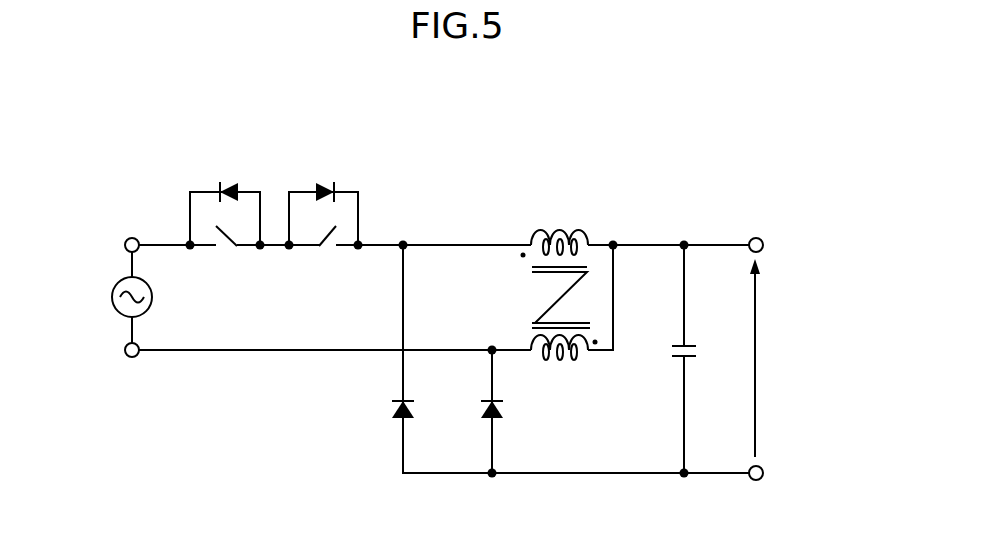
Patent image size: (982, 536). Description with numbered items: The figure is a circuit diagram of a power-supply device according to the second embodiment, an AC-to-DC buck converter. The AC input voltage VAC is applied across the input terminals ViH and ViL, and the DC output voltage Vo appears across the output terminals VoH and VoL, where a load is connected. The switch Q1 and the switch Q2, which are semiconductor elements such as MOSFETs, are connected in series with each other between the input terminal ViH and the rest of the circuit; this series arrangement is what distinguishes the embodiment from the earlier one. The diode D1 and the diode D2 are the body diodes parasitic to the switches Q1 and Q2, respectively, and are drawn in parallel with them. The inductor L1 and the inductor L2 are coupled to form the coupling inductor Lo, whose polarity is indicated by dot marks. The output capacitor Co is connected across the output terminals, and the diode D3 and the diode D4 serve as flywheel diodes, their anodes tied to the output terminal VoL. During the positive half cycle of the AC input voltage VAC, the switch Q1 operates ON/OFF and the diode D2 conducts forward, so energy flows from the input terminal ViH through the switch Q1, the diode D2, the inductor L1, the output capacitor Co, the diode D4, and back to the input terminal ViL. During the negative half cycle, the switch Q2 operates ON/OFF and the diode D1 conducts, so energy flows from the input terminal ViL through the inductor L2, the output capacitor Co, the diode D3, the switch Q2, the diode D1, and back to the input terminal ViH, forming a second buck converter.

The input terminal ViH is at (129, 238).
The input terminal ViL is at (125, 357).
The AC input voltage VAC is at (114, 287).
The switch Q1 is at (232, 237).
The switch Q2 is at (323, 237).
The diode D1 is at (237, 192).
The diode D2 is at (334, 192).
The coupling inductor Lo is at (555, 300).
The inductor L1 is at (562, 240).
The inductor L2 is at (562, 355).
The diode D3 is at (400, 410).
The diode D4 is at (490, 410).
The output capacitor Co is at (690, 346).
The DC output voltage Vo is at (773, 358).
The output terminal VoH is at (763, 241).
The output terminal VoL is at (763, 470).